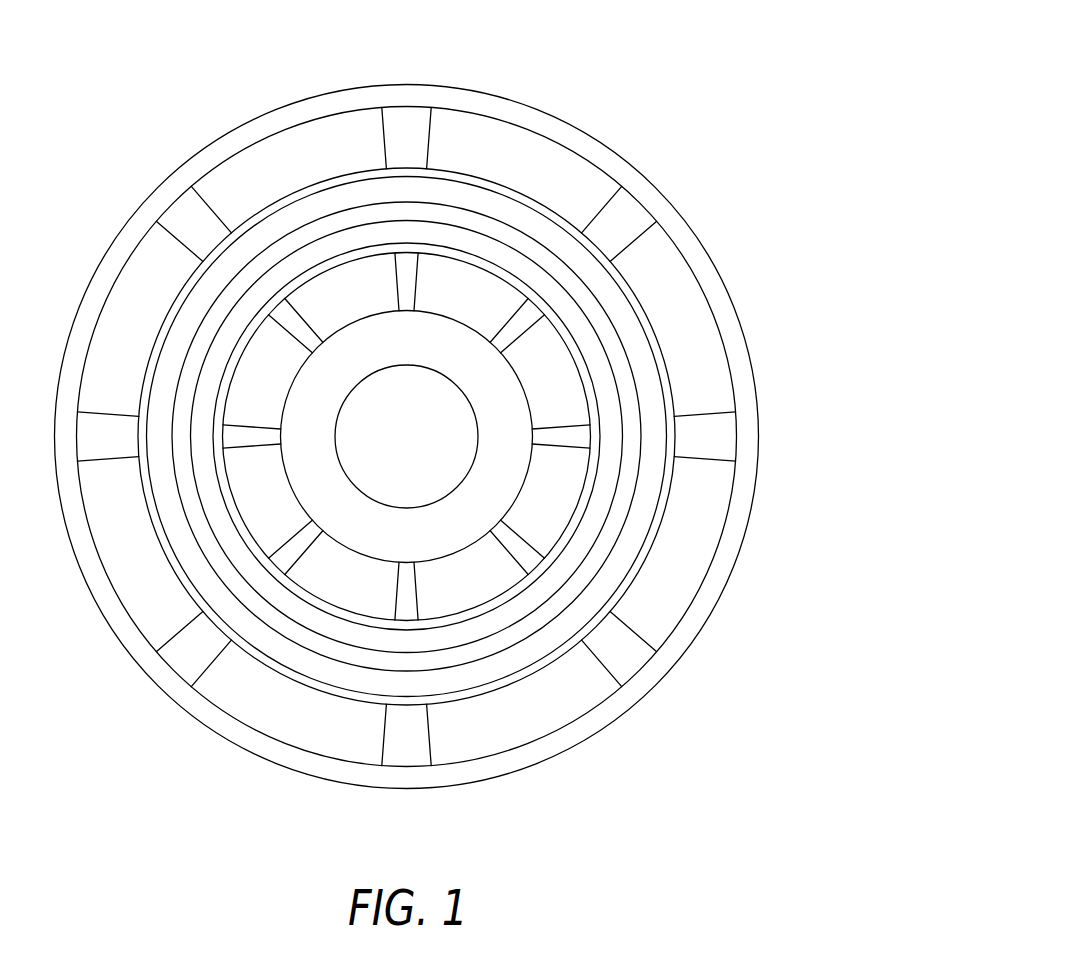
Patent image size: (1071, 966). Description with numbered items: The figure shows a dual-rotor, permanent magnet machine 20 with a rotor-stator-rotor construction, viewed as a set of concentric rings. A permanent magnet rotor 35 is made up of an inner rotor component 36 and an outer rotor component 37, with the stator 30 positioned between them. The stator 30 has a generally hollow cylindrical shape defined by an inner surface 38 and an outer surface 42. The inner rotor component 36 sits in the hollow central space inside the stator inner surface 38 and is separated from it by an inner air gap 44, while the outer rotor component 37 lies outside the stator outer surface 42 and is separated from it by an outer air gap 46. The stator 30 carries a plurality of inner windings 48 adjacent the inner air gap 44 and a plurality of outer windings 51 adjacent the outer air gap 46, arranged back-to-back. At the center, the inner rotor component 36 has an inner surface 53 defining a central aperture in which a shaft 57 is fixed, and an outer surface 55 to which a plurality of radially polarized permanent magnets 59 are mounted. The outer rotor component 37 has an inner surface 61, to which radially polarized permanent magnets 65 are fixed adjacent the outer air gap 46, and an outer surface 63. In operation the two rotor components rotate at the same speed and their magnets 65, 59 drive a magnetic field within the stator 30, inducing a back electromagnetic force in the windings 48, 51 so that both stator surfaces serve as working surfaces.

The dual-rotor permanent magnet machine 20 is at (665, 40).
The permanent magnet rotor 35 is at (214, 90).
The outer surface 63 is at (68, 548).
The outer rotor component 37 is at (602, 155).
The inner surface 61 is at (112, 581).
The permanent magnets 65 is at (135, 300).
The outer air gap 46 is at (542, 667).
The stator 30 is at (303, 187).
The outer windings 51 is at (197, 578).
The outer surface 42 is at (173, 380).
The inner surface 38 is at (622, 472).
The inner rotor component 36 is at (473, 237).
The inner windings 48 is at (287, 607).
The inner air gap 44 is at (570, 533).
The permanent magnets 59 is at (573, 400).
The outer surface 55 is at (523, 483).
The shaft 57 is at (378, 415).
The inner surface 53 is at (337, 458).